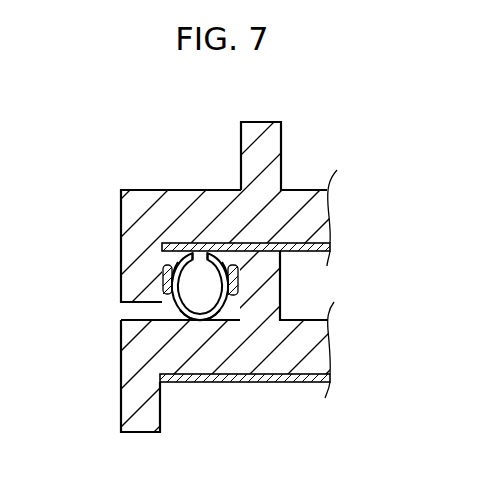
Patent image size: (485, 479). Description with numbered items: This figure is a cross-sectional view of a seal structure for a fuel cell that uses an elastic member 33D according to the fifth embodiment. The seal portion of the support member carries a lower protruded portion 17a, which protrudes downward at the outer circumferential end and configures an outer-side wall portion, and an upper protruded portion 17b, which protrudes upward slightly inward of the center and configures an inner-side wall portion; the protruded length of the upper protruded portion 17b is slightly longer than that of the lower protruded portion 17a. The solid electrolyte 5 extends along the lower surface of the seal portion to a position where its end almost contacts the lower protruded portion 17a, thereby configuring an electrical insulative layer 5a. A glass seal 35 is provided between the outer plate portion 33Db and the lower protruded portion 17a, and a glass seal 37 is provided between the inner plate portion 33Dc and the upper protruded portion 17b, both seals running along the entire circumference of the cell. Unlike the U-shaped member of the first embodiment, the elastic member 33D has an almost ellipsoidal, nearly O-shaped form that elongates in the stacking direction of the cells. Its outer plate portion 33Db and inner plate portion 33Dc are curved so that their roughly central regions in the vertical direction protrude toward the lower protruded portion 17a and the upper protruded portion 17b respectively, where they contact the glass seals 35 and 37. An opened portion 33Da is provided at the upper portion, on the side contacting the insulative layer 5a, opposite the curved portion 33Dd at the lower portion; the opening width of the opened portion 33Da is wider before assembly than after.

The lower protruded portion 17a is at (122, 280).
The upper protruded portion 17b is at (281, 146).
The electrical insulative layer 5a is at (306, 246).
The solid electrolyte 5 is at (242, 239).
The glass seal 35 is at (167, 262).
The glass seal 37 is at (232, 298).
The elastic member 33D is at (177, 305).
The opened portion 33Da is at (220, 288).
The outer plate portion 33Db is at (181, 288).
The inner plate portion 33Dc is at (204, 249).
The curved portion 33Dd is at (200, 321).